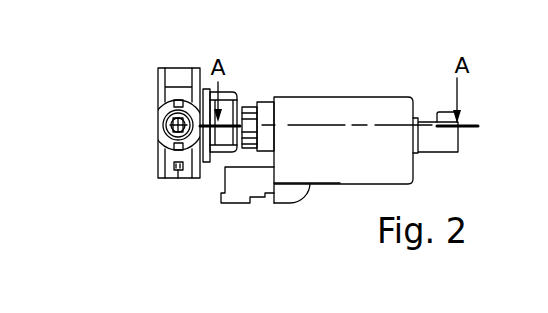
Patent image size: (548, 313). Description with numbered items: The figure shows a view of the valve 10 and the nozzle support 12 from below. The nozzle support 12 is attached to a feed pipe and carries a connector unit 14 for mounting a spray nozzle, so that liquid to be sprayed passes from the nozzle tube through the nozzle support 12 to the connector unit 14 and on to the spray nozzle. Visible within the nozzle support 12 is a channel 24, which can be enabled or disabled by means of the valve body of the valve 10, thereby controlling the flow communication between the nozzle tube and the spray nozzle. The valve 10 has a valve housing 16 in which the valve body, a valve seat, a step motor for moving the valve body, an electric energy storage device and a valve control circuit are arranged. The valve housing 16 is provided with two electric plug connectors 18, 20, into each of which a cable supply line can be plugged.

The valve 10 is at (288, 82).
The nozzle support 12 is at (149, 88).
The connector unit 14 is at (165, 145).
The valve housing 16 is at (337, 112).
The electric plug connector 18 is at (427, 120).
The electric plug connector 20 is at (240, 190).
The channel 24 is at (170, 124).